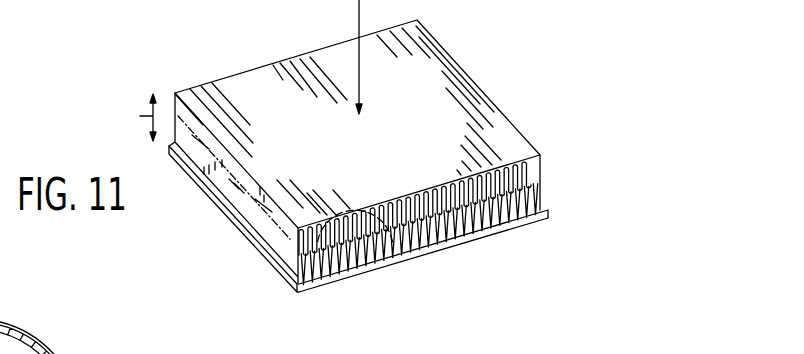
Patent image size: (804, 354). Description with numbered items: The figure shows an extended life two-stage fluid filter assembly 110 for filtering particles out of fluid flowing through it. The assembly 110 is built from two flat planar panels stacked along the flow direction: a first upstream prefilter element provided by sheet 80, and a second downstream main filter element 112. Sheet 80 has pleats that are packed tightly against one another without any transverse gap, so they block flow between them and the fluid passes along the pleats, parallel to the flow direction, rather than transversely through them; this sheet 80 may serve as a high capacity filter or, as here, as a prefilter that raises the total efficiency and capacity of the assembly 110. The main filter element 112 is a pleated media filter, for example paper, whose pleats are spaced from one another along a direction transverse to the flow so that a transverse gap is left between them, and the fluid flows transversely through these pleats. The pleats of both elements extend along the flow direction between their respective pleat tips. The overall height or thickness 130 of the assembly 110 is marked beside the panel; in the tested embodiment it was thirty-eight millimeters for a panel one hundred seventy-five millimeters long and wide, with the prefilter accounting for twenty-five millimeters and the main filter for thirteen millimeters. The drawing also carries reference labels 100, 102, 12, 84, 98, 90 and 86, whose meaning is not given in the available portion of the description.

The heat sink assembly 100 is at (524, 154).
The extended life two-stage fluid filter assembly 110 is at (460, 58).
The sheet 80 is at (541, 167).
The corrugated fins 102 is at (527, 188).
The main filter element 112 is at (545, 201).
The air flow 12 is at (314, 287).
The height or thickness 130 is at (132, 117).
The component 84 is at (8, 7).
The component 98 is at (42, 7).
The component 90 is at (68, 6).
The component 86 is at (122, 6).